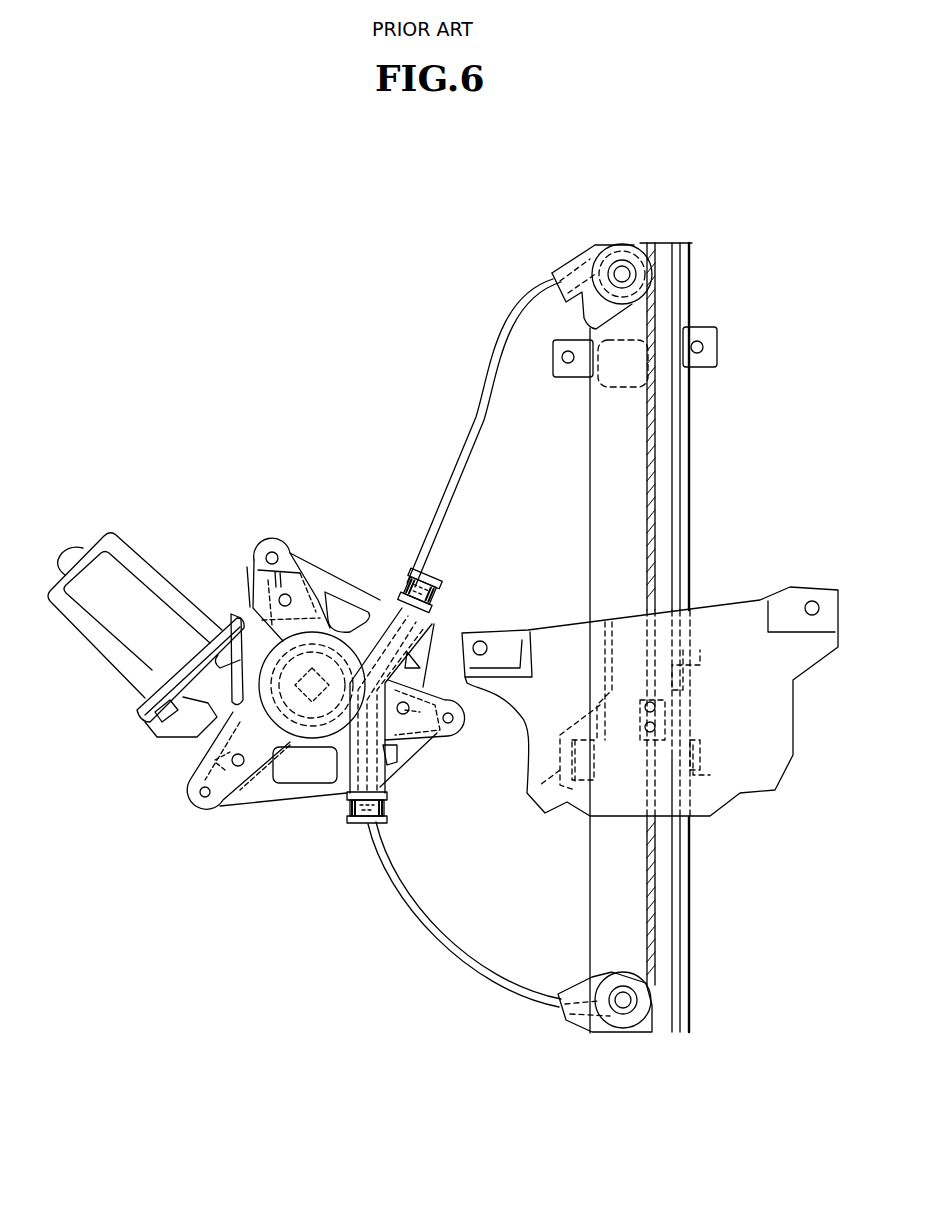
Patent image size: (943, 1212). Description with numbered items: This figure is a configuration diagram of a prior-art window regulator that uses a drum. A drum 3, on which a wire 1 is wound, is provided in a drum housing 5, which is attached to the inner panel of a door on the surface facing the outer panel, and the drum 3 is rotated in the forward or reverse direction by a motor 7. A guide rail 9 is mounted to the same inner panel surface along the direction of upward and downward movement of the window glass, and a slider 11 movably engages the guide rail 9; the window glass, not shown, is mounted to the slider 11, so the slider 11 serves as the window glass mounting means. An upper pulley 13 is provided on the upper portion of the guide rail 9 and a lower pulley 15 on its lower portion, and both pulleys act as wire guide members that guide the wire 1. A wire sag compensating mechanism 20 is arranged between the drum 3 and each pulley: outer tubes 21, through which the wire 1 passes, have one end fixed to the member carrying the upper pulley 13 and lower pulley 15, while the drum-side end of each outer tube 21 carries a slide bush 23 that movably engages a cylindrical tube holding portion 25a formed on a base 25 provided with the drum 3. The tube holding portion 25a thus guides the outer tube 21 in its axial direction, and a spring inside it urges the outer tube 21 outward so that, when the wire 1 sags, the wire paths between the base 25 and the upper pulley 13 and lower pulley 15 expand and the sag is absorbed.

The wire 1 is at (390, 793).
The drum 3 is at (396, 772).
The drum housing 5 is at (247, 650).
The motor 7 is at (137, 633).
The guide rail 9 is at (660, 482).
The slider 11 is at (718, 616).
The upper pulley 13 is at (630, 275).
The lower pulley 15 is at (640, 985).
The wire sag compensating mechanism 20 is at (403, 543).
The outer tube 21 is at (472, 455).
The slide bush 23 is at (400, 600).
The base 25 is at (302, 712).
The tube holding portion 25a is at (367, 600).